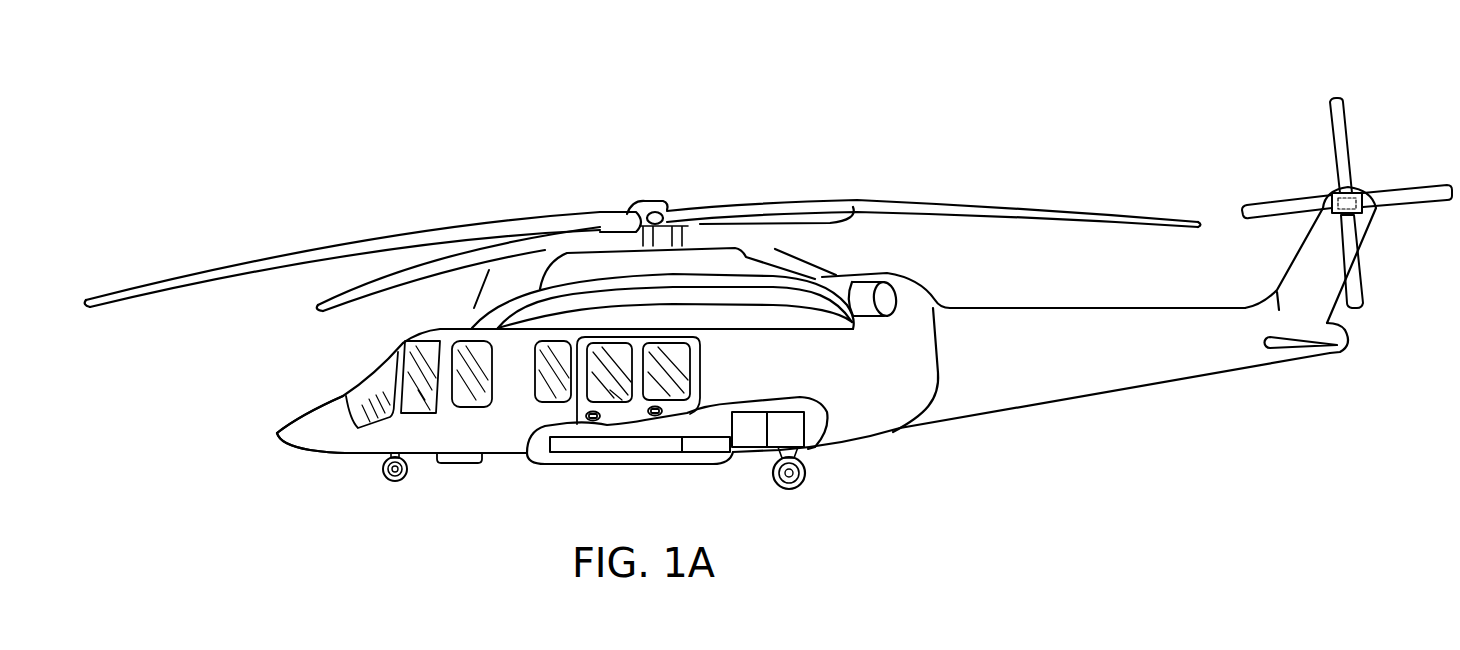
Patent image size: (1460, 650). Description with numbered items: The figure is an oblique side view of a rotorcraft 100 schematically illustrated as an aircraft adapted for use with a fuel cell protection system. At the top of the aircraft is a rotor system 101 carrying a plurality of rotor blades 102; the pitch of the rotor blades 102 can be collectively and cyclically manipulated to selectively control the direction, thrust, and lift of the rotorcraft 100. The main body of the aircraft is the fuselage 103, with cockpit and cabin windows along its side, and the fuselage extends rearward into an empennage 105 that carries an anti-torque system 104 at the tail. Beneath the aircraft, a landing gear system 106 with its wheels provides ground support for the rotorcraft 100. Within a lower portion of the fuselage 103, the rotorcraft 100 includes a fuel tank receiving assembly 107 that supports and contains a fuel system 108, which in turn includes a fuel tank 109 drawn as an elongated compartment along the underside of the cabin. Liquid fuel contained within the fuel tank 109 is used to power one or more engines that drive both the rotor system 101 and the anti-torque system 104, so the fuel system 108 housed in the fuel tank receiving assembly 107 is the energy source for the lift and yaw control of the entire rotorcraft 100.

The rotorcraft 100 is at (817, 157).
The rotor system 101 is at (927, 193).
The rotor blades 102 is at (1022, 205).
The fuselage 103 is at (332, 454).
The anti-torque system 104 is at (1400, 190).
The empennage 105 is at (1003, 407).
The landing gear system 106 is at (792, 500).
The fuel tank receiving assembly 107 is at (814, 426).
The fuel system 108 is at (606, 465).
The fuel tank 109 is at (696, 453).